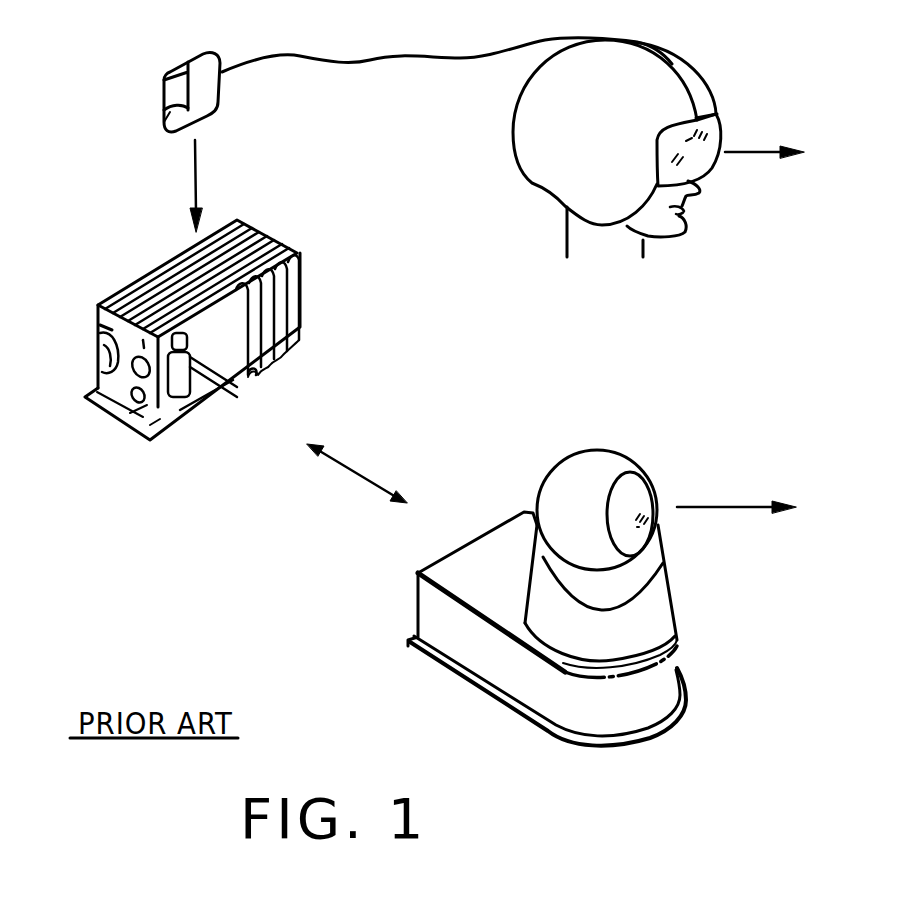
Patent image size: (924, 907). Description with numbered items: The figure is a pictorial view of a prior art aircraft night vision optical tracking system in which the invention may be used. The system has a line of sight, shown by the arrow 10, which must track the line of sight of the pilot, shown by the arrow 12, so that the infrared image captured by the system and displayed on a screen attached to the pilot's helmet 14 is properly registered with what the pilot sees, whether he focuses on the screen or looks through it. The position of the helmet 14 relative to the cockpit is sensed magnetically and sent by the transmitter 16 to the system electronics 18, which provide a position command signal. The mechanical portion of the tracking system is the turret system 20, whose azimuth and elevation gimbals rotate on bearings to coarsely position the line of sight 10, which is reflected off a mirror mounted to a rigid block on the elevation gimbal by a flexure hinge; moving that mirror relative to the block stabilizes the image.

The line of sight of the system 10 is at (720, 507).
The line of sight of the pilot 12 is at (746, 152).
The pilot's helmet 14 is at (700, 62).
The transmitter 16 is at (172, 84).
The system electronics 18 is at (102, 356).
The turret system 20 is at (655, 607).